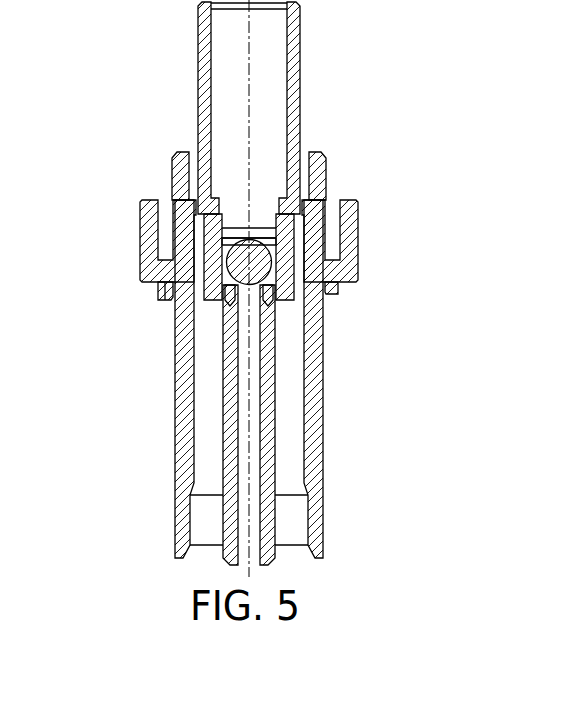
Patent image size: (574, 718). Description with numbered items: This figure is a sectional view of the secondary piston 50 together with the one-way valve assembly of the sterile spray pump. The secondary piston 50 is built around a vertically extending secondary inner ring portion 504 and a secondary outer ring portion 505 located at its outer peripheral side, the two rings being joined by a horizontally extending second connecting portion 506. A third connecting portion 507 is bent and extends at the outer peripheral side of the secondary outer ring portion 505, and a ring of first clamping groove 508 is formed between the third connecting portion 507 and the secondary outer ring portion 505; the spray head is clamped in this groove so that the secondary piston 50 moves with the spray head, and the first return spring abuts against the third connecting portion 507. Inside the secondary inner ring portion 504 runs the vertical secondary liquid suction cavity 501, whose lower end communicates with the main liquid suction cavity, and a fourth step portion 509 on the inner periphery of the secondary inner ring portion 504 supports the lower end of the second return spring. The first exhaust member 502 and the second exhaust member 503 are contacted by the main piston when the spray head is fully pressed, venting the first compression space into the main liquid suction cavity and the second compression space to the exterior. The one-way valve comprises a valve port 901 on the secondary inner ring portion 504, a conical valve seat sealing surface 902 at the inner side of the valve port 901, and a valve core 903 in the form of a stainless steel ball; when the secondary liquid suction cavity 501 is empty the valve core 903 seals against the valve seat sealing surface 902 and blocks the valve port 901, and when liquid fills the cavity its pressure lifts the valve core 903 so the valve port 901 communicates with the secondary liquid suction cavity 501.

The secondary piston 50 is at (136, 62).
The secondary liquid suction cavity 501 is at (252, 460).
The first exhaust member 502 is at (227, 283).
The second exhaust member 503 is at (170, 308).
The secondary inner ring portion 504 is at (265, 392).
The secondary outer ring portion 505 is at (312, 338).
The second connecting portion 506 is at (322, 188).
The third connecting portion 507 is at (337, 276).
The first clamping groove 508 is at (330, 232).
The fourth step portion 509 is at (300, 160).
The valve port 901 is at (232, 268).
The valve seat sealing surface 902 is at (228, 283).
The valve core 903 is at (228, 248).